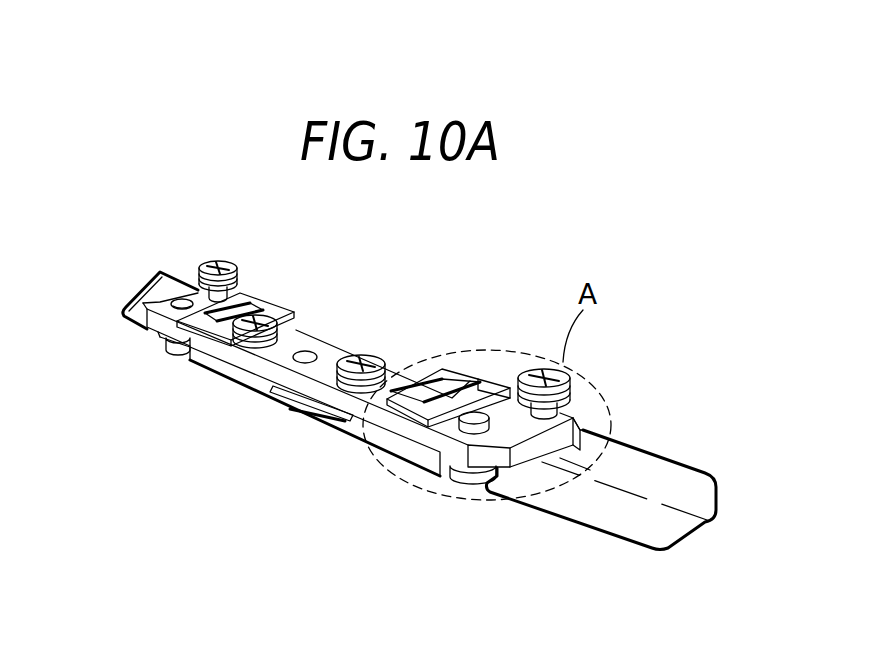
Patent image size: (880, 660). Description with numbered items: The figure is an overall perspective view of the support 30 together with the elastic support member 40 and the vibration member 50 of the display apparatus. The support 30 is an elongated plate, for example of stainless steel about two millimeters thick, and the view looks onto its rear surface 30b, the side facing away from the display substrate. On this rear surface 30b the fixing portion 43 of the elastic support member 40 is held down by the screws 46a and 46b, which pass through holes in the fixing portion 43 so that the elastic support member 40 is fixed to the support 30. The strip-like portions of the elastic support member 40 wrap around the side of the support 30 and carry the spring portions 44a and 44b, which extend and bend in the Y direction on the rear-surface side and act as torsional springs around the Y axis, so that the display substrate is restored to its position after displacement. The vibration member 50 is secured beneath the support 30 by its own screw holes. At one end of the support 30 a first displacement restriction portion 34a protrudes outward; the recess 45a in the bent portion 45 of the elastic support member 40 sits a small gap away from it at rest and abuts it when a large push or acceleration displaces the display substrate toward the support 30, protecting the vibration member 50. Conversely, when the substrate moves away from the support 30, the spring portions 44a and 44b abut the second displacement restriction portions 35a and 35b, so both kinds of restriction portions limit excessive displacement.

The support 30 is at (162, 338).
The rear surface 30b is at (202, 297).
The first displacement restriction portion 34a is at (581, 426).
The second displacement restriction portion 35a is at (446, 424).
The second displacement restriction portion 35b is at (215, 340).
The elastic support member 40 is at (133, 323).
The fixing portion 43 is at (305, 349).
The spring portion 44a is at (491, 387).
The spring portion 44b is at (252, 297).
The bent portion 45 is at (688, 470).
The recess 45a is at (572, 450).
The screw 46a is at (371, 360).
The screw 46b is at (268, 317).
The vibration member 50 is at (203, 360).